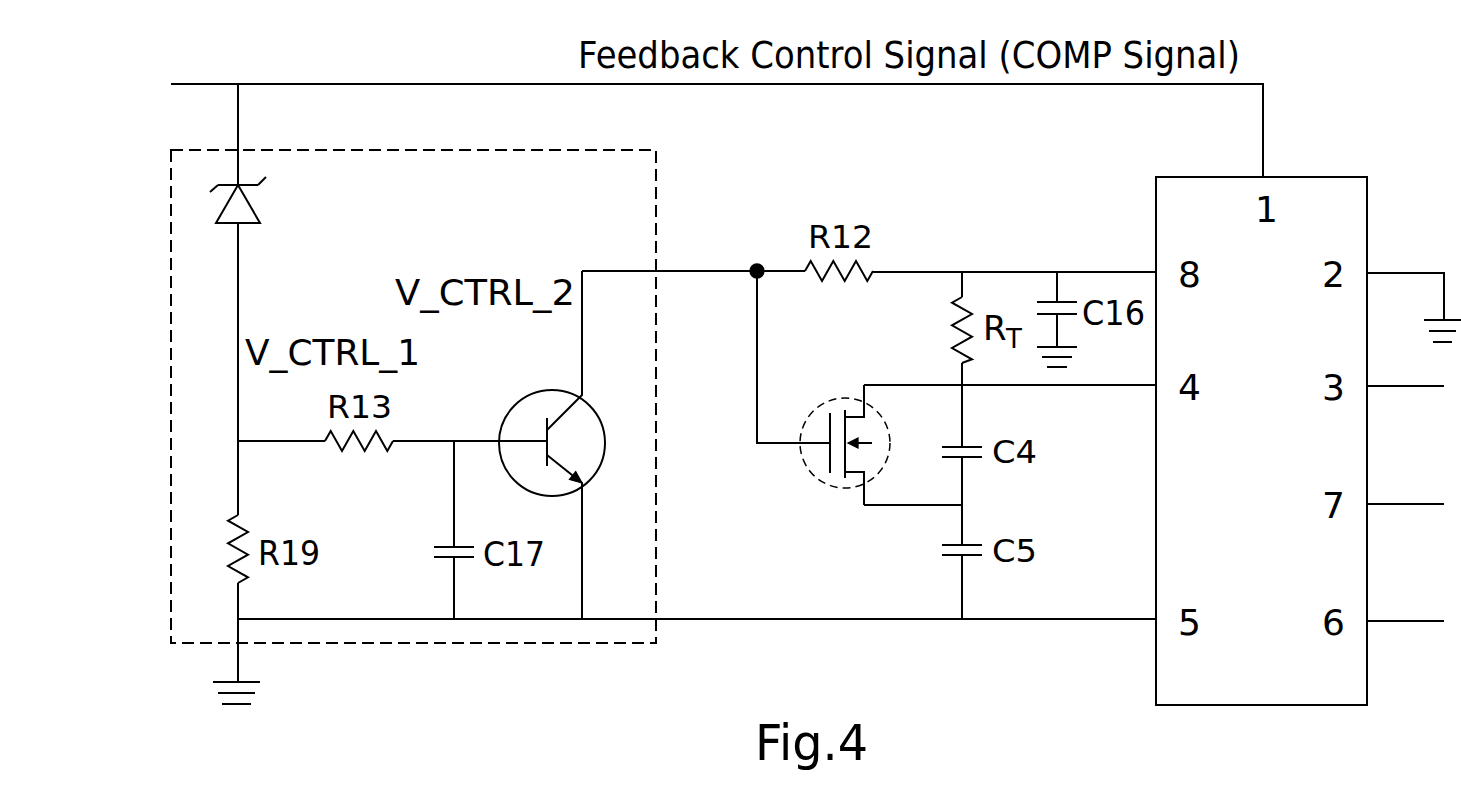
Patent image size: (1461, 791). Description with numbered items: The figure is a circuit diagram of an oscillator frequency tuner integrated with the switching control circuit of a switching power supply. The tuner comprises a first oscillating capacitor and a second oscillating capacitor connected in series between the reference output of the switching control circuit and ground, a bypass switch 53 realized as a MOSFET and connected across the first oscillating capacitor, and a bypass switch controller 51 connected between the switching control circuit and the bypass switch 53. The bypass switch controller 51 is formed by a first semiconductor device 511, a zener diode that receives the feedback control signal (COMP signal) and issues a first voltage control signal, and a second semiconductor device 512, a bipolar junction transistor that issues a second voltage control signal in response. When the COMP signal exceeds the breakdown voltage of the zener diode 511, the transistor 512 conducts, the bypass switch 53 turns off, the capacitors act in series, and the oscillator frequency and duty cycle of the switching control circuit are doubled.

The bypass switch controller 51 is at (583, 157).
The first semiconductor device 511 is at (265, 200).
The second semiconductor device 512 is at (552, 445).
The bypass switch 53 is at (823, 388).